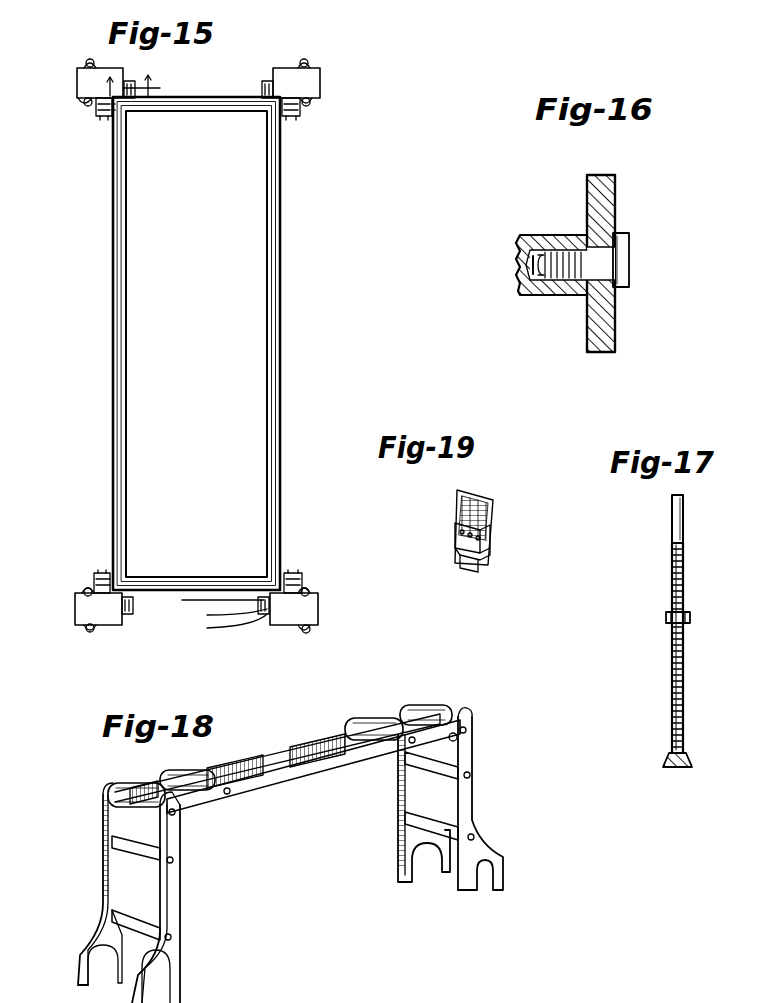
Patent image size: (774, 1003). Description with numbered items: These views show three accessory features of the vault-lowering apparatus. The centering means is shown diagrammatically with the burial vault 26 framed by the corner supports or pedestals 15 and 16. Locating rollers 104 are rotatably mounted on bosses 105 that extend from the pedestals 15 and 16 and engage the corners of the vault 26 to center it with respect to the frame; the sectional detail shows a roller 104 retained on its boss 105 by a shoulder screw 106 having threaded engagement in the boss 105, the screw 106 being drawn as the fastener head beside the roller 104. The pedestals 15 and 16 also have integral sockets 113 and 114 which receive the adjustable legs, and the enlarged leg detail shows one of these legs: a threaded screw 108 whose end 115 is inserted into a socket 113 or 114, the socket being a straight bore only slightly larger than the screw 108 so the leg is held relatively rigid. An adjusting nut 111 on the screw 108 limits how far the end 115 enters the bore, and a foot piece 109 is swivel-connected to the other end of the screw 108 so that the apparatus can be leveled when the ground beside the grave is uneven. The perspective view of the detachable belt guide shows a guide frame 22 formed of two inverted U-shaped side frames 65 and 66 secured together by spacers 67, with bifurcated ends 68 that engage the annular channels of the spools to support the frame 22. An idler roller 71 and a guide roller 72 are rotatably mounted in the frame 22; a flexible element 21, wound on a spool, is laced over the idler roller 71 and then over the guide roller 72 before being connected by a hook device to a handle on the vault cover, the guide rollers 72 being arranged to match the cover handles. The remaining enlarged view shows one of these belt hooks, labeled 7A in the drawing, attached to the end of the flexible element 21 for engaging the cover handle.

In FIG. 15, the vault 26 is at (196, 343).
In FIG. 15, the corner support or pedestal 16 is at (77, 78).
In FIG. 15, the corner support or pedestal 15 is at (118, 622).
In FIG. 15, the socket 114 is at (86, 62).
In FIG. 15, the socket 113 is at (84, 102).
In FIG. 15, the boss 105 is at (98, 105).
In FIG. 16, the boss 105 is at (522, 280).
In FIG. 15, the locating roller 104 is at (101, 111).
In FIG. 16, the locating roller 104 is at (612, 302).
In FIG. 15, the screw 106 is at (102, 117).
In FIG. 16, the screw 106 is at (629, 260).
In FIG. 19, the flexible element 21 is at (485, 517).
In FIG. 19, the block 7A is at (468, 559).
In FIG. 17, the end of screw 115 is at (684, 528).
In FIG. 17, the threaded screw 108 is at (684, 696).
In FIG. 17, the adjusting nut 111 is at (690, 617).
In FIG. 17, the foot piece 109 is at (692, 762).
In FIG. 18, the side frame 65 is at (272, 783).
In FIG. 18, the side frame 66 is at (110, 872).
In FIG. 18, the guide frame 22 is at (482, 799).
In FIG. 18, the spacer 67 is at (288, 749).
In FIG. 18, the idler roller 71 is at (136, 786).
In FIG. 18, the guide roller 72 is at (190, 764).
In FIG. 18, the bifurcated end 68 is at (76, 977).